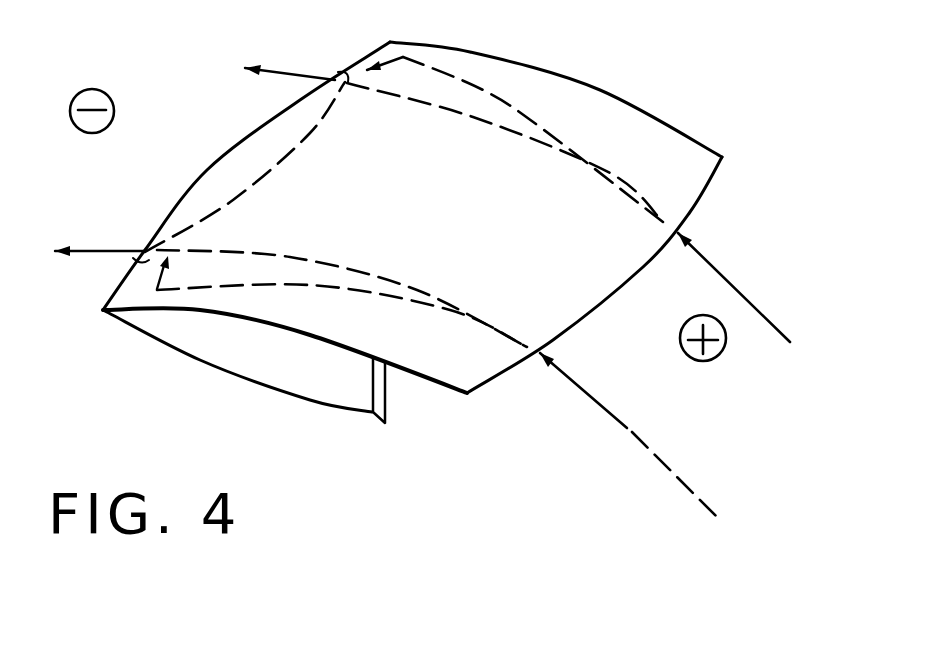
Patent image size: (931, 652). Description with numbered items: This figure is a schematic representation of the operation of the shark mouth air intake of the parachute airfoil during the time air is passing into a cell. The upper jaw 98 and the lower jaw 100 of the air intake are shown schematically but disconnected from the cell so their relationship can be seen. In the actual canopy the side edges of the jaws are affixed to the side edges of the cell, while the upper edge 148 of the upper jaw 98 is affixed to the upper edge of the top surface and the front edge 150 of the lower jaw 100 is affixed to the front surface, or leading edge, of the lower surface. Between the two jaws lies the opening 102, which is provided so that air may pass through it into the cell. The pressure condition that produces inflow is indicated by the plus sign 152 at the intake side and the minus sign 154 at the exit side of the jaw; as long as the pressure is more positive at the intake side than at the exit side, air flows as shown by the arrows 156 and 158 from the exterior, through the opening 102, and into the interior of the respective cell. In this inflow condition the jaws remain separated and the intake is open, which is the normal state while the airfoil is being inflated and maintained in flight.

The upper jaw 98 is at (464, 217).
The lower jaw 100 is at (237, 365).
The opening 102 is at (227, 153).
The upper edge 148 is at (715, 182).
The front edge 150 is at (387, 403).
The plus sign 152 is at (700, 361).
The minus sign 154 is at (75, 89).
The arrow 156 is at (717, 268).
The arrow 158 is at (607, 407).